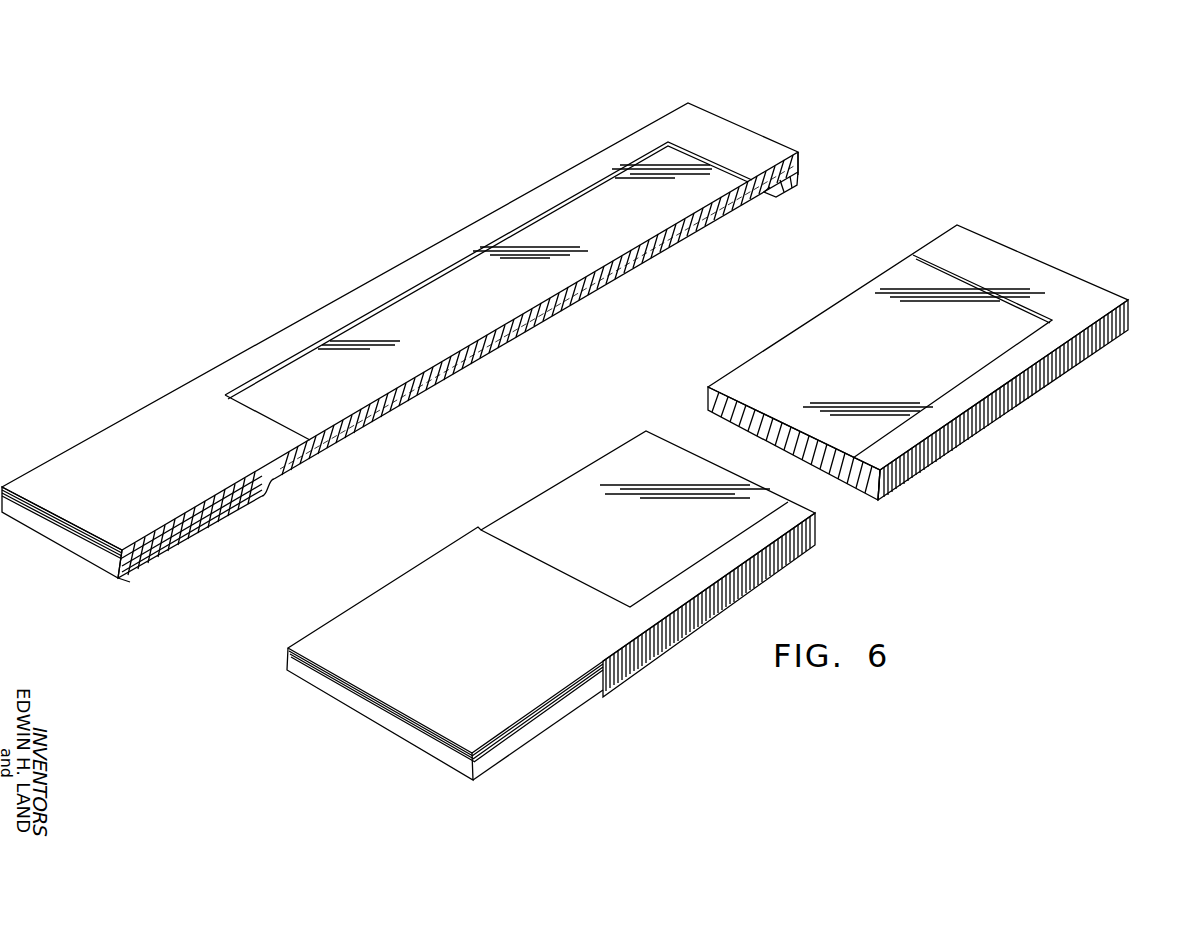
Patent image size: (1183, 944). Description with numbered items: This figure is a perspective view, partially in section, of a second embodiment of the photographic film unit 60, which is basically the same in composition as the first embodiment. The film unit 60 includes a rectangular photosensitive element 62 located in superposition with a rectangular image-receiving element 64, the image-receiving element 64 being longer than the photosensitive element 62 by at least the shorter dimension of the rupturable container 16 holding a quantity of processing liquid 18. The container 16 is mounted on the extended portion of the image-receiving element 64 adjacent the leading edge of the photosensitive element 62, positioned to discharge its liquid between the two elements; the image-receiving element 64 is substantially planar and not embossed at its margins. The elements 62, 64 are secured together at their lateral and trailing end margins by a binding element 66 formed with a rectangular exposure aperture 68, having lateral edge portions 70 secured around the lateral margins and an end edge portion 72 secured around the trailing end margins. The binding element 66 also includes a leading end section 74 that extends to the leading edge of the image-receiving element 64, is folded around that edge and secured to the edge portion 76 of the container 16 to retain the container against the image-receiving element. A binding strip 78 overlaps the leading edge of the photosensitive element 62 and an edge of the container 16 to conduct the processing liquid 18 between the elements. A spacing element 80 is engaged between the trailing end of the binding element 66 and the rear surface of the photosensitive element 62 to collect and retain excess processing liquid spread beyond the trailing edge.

The rupturable container 16 is at (182, 547).
The processing liquid 18 is at (217, 520).
The film unit 60 is at (278, 320).
The photosensitive element 62 is at (480, 360).
The image-receiving element 64 is at (527, 322).
The binding element 66 is at (162, 447).
The exposure aperture 68 is at (253, 381).
The lateral edge portions 70 is at (867, 493).
The end edge portion 72 is at (798, 178).
The leading end section 74 is at (88, 516).
The edge portion 76 is at (138, 568).
The binding strip 78 is at (285, 488).
The spacing element 80 is at (785, 190).